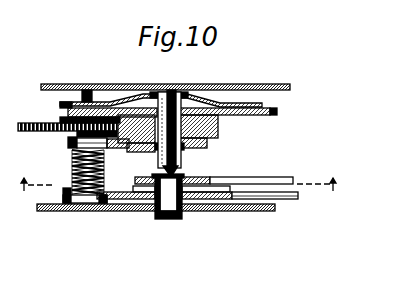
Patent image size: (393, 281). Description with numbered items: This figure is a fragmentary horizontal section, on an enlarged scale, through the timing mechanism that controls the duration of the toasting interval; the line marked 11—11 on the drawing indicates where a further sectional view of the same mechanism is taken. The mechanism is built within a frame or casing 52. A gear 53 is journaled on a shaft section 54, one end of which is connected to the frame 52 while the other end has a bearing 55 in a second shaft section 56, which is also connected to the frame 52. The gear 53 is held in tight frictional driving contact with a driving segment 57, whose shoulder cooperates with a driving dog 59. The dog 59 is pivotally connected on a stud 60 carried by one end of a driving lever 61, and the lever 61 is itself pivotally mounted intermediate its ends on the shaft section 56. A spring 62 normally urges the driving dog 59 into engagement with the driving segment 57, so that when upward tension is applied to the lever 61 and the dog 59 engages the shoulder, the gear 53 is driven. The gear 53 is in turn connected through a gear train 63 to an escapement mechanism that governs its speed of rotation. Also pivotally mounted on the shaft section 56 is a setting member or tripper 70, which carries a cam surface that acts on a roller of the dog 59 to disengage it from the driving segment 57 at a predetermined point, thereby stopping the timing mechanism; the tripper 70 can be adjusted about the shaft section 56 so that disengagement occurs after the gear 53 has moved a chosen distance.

The section line 11 is at (181, 186).
The frame or casing 52 is at (243, 84).
The gear 53 is at (254, 116).
The shaft section 54 is at (163, 96).
The bearing 55 is at (180, 171).
The shaft section 56 is at (158, 219).
The driving segment 57 is at (133, 149).
The driving dog 59 is at (68, 143).
The stud 60 is at (80, 203).
The driving lever 61 is at (285, 199).
The spring 62 is at (70, 166).
The gear train 63 is at (54, 119).
The setting member or tripper 70 is at (265, 177).